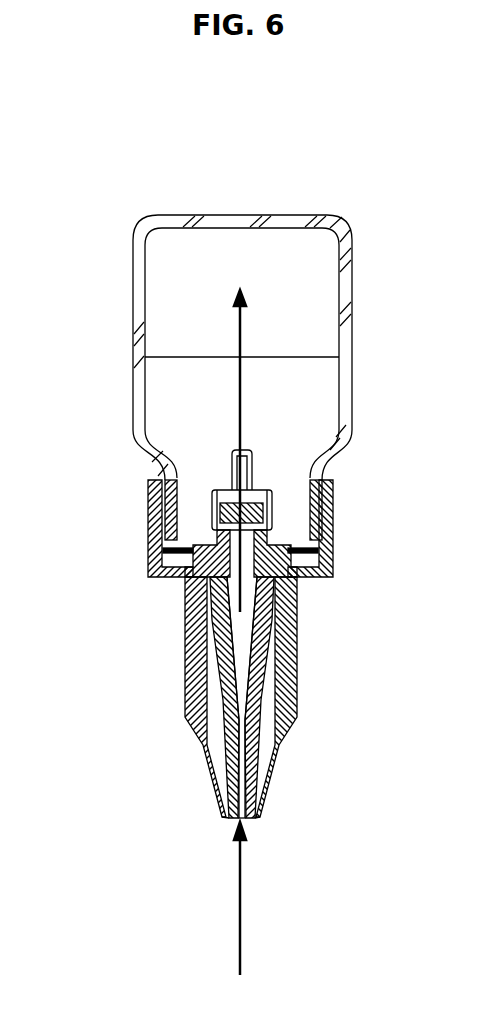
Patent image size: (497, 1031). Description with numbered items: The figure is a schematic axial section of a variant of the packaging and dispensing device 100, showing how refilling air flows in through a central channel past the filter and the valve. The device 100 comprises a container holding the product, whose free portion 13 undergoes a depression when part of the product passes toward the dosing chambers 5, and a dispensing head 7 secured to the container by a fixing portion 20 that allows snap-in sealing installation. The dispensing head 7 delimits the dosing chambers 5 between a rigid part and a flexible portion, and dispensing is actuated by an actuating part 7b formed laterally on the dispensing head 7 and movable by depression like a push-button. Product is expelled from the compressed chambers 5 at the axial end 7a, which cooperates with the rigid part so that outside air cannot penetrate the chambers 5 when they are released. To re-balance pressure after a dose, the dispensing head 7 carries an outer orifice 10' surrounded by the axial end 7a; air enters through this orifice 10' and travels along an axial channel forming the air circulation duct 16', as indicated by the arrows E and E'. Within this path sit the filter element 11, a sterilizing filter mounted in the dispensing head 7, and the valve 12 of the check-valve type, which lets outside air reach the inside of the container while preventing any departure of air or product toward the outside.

The packaging and dispensing device 100 is at (150, 791).
The free portion 13 is at (220, 253).
The valve 12 is at (251, 458).
The fixing portion 20 is at (330, 522).
The filter element 11 is at (160, 545).
The dispensing head 7 is at (330, 601).
The actuating part 7b is at (182, 687).
The dosing chamber 5 is at (222, 675).
The air circulation duct 16' is at (337, 697).
The axial end 7a is at (212, 790).
The outer orifice 10' is at (323, 803).